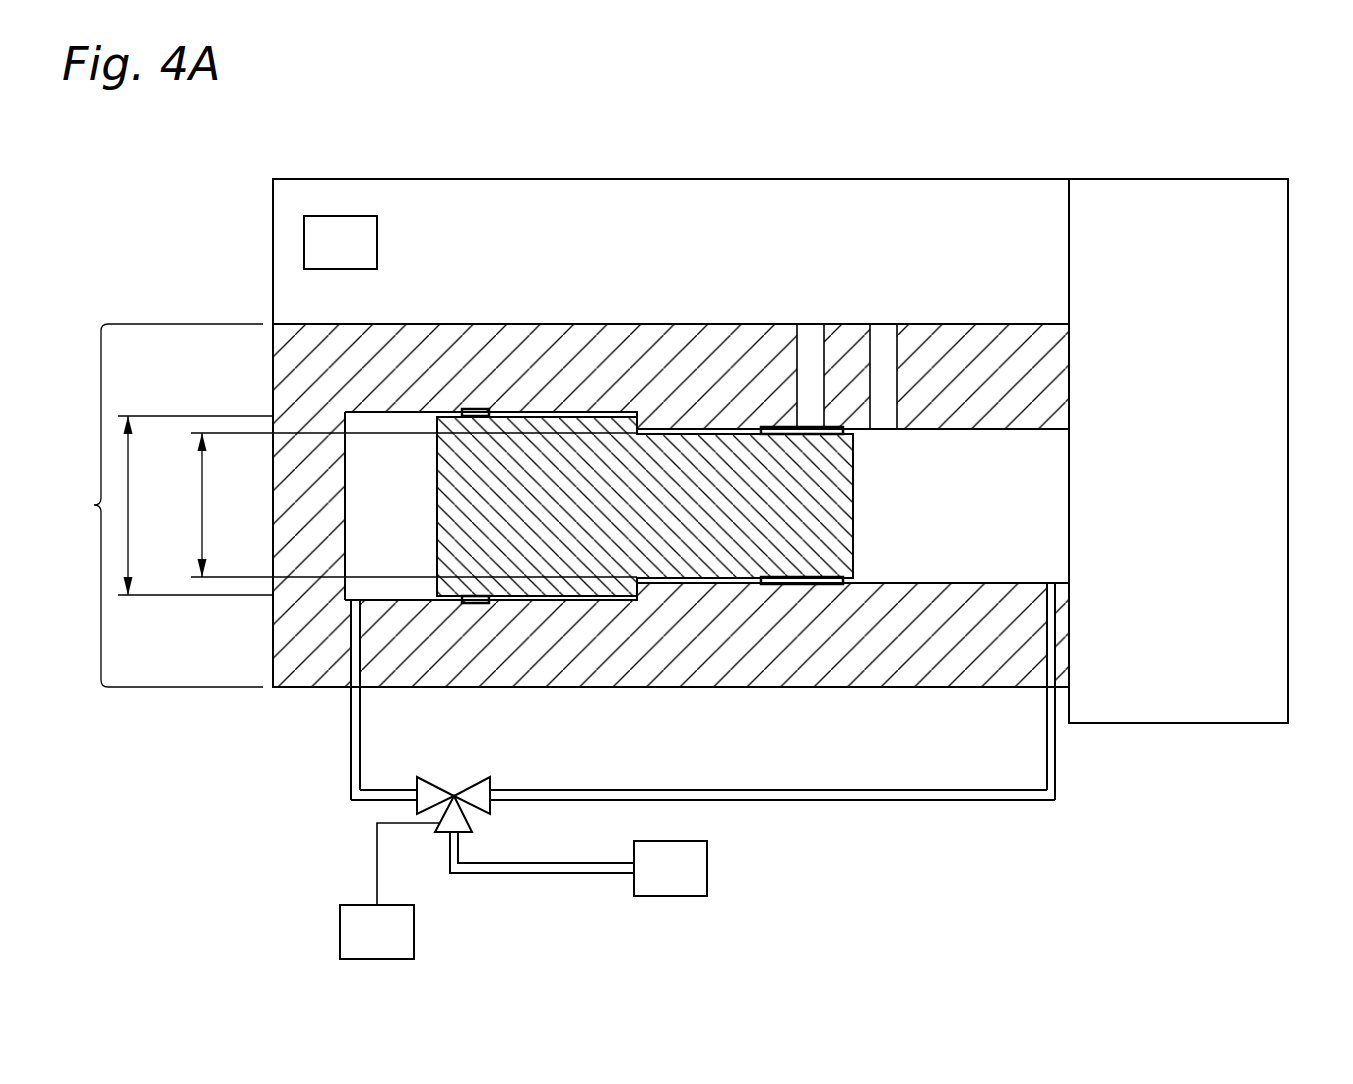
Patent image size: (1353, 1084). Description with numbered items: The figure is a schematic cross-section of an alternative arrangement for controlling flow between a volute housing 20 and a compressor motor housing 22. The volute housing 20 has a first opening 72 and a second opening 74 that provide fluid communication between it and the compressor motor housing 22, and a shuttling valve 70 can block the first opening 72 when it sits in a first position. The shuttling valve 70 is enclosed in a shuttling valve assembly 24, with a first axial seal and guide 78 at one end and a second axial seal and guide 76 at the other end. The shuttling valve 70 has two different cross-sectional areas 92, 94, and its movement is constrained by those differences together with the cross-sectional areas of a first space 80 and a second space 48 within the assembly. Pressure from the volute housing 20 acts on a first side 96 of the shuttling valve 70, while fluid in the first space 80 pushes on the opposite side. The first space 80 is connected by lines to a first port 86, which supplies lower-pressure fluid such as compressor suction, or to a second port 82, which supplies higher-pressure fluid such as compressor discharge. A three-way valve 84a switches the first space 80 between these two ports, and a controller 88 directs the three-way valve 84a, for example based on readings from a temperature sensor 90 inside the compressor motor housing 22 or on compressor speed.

The volute housing 20 is at (1130, 179).
The compressor motor housing 22 is at (498, 178).
The shuttling valve assembly 24 is at (157, 505).
The second space 48 is at (1020, 545).
The shuttling valve 70 is at (413, 590).
The first opening 72 is at (810, 324).
The second opening 74 is at (883, 324).
The second axial seal and guide 76 is at (802, 585).
The first axial seal and guide 78 is at (477, 604).
The first space 80 is at (375, 500).
The second port 82 is at (1069, 488).
The three-way valve 84a is at (425, 783).
The first port 86 is at (682, 897).
The controller 88 is at (353, 904).
The temperature sensor 90 is at (304, 230).
The first cross-sectional area 92 is at (128, 492).
The second cross-sectional area 94 is at (202, 530).
The first side 96 is at (853, 538).